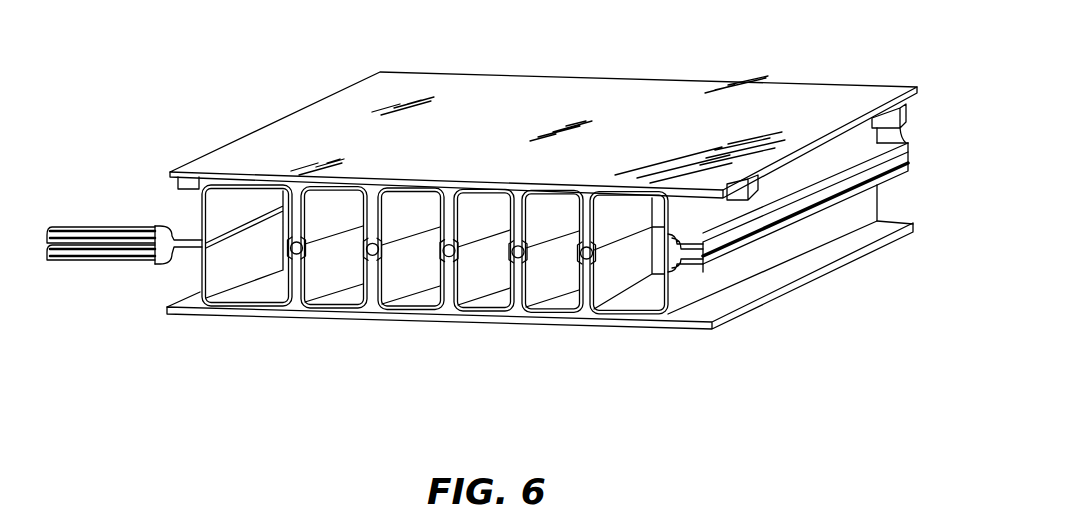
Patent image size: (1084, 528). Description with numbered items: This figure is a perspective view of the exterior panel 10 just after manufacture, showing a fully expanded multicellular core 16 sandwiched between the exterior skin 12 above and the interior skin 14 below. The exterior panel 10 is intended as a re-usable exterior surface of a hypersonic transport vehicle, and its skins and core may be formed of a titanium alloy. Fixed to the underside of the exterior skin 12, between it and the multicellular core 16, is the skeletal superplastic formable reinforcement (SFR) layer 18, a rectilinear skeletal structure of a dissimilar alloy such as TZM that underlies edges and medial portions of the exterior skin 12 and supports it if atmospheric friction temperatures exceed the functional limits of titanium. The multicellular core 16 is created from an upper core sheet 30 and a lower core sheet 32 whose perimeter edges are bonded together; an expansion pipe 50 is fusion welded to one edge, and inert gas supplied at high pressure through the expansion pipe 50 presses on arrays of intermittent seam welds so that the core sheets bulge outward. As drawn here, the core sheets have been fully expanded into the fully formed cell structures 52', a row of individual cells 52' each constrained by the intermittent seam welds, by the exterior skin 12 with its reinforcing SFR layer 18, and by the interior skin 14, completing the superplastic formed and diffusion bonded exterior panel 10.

The exterior panel 10 is at (266, 40).
The exterior skin 12 is at (556, 87).
The interior skin 14 is at (860, 243).
The multicellular core 16 is at (888, 200).
The skeletal superplastic formable reinforcement (SFR) layer 18 is at (197, 183).
The upper core sheet 30 is at (899, 138).
The lower core sheet 32 is at (906, 172).
The expansion pipe 50 is at (108, 228).
The fully formed cell structures 52' is at (452, 284).